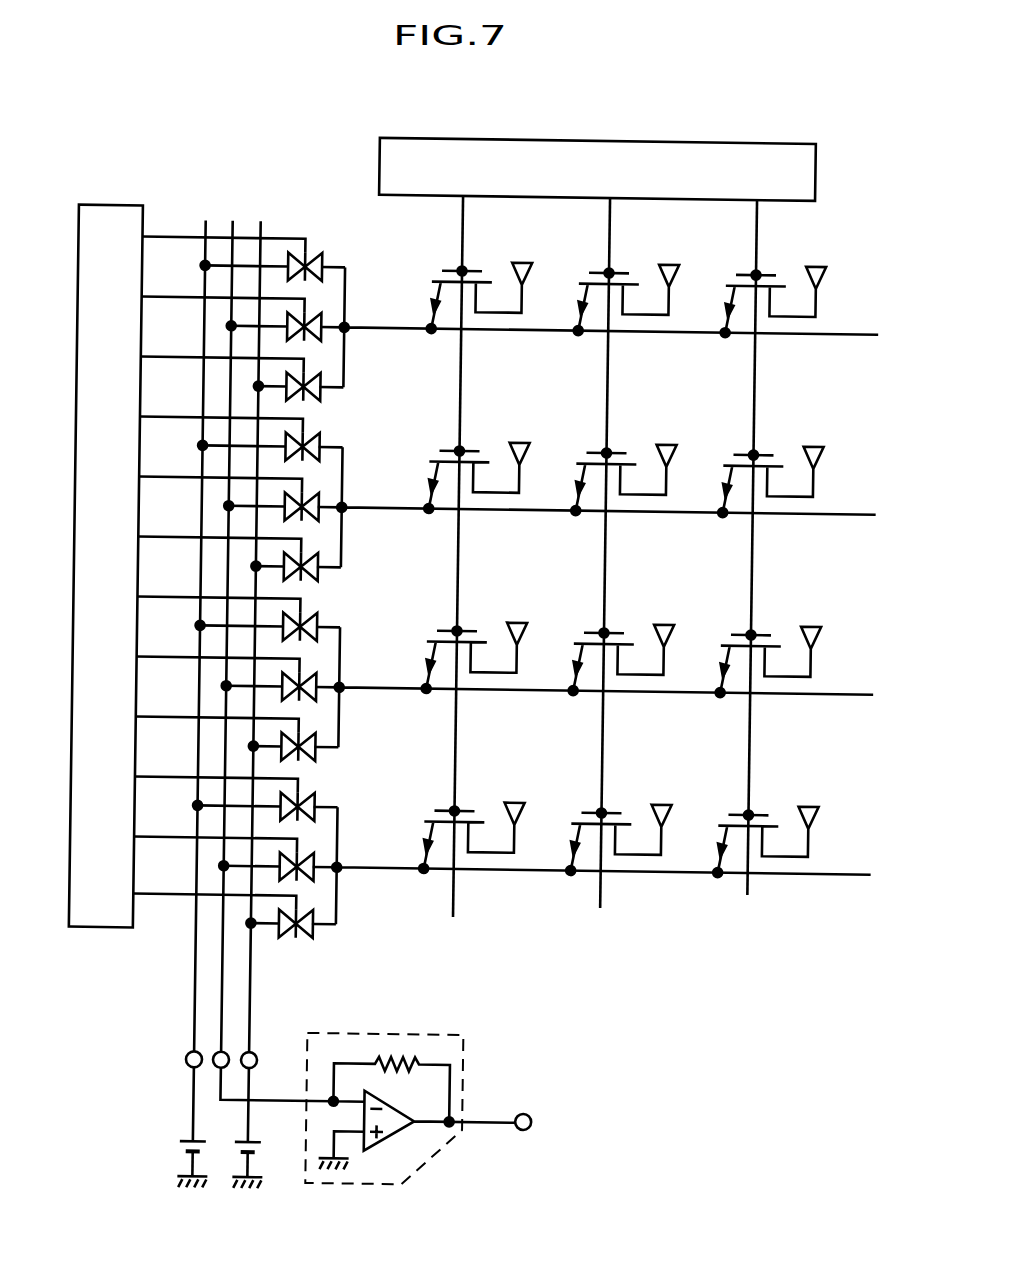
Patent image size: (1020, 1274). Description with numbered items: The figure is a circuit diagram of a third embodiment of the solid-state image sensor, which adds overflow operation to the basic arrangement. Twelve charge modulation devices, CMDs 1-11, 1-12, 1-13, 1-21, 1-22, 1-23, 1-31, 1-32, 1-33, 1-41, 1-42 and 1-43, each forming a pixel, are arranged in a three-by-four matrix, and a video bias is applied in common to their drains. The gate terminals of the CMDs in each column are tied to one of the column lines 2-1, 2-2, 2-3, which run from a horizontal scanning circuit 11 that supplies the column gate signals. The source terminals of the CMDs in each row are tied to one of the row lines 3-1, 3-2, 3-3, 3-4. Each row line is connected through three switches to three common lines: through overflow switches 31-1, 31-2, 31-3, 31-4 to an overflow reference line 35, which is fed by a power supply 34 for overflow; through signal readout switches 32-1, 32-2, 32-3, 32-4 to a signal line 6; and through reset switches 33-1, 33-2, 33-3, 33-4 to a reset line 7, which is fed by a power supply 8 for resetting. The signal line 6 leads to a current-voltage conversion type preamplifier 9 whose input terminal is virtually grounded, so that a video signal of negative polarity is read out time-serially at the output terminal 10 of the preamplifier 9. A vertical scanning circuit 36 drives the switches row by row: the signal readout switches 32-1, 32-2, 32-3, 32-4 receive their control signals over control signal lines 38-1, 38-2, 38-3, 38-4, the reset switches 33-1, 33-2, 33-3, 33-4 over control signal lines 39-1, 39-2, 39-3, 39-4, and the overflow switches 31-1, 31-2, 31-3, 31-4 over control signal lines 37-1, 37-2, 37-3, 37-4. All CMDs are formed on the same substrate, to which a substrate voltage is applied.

The horizontal scanning circuit 11 is at (812, 168).
The vertical scanning circuit 36 is at (103, 933).
The column line 2-1 is at (462, 224).
The column line 2-2 is at (609, 226).
The column line 2-3 is at (756, 228).
The row line 3-1 is at (838, 333).
The row line 3-2 is at (843, 513).
The row line 3-3 is at (845, 693).
The row line 3-4 is at (822, 874).
The CMD 1-11 is at (426, 279).
The CMD 1-12 is at (595, 281).
The CMD 1-13 is at (725, 292).
The CMD 1-21 is at (431, 459).
The CMD 1-22 is at (573, 462).
The CMD 1-23 is at (718, 463).
The CMD 1-31 is at (436, 632).
The CMD 1-32 is at (581, 637).
The CMD 1-33 is at (726, 639).
The CMD 1-41 is at (430, 813).
The CMD 1-42 is at (576, 814).
The CMD 1-43 is at (720, 817).
The control signal line 39-1 is at (177, 241).
The control signal line 39-2 is at (179, 421).
The control signal line 39-3 is at (179, 601).
The control signal line 39-4 is at (179, 781).
The control signal line 38-1 is at (179, 301).
The control signal line 38-2 is at (179, 481).
The control signal line 38-3 is at (179, 661).
The control signal line 38-4 is at (179, 841).
The control signal line 37-1 is at (179, 361).
The control signal line 37-2 is at (179, 541).
The control signal line 37-3 is at (179, 721).
The control signal line 37-4 is at (179, 898).
The reset switch 33-1 is at (318, 261).
The reset switch 33-2 is at (318, 441).
The reset switch 33-3 is at (322, 626).
The reset switch 33-4 is at (320, 802).
The signal readout switch 32-1 is at (312, 318).
The signal readout switch 32-2 is at (312, 497).
The signal readout switch 32-3 is at (305, 680).
The signal readout switch 32-4 is at (311, 860).
The overflow switch 31-1 is at (315, 377).
The overflow switch 31-2 is at (312, 561).
The overflow switch 31-3 is at (305, 737).
The overflow switch 31-4 is at (308, 912).
The reset line 7 is at (199, 992).
The signal line 6 is at (229, 995).
The overflow reference line 35 is at (257, 1032).
The power supply for resetting 8 is at (186, 1148).
The power supply for overflow 34 is at (270, 1152).
The preamplifier 9 is at (418, 1034).
The output terminal 10 is at (538, 1113).